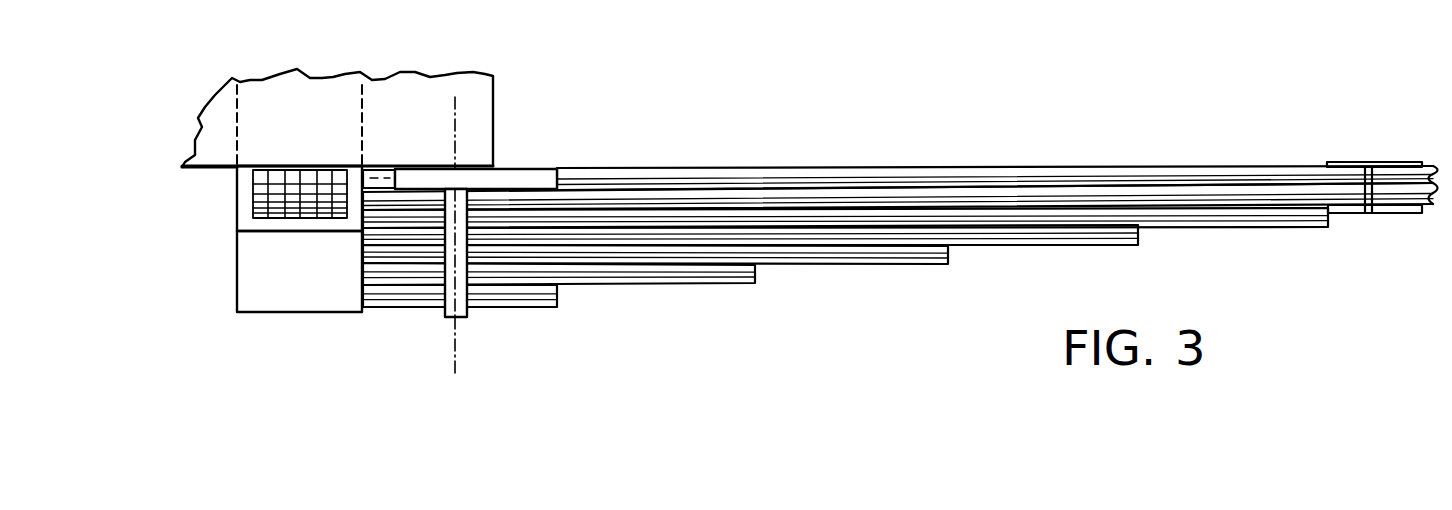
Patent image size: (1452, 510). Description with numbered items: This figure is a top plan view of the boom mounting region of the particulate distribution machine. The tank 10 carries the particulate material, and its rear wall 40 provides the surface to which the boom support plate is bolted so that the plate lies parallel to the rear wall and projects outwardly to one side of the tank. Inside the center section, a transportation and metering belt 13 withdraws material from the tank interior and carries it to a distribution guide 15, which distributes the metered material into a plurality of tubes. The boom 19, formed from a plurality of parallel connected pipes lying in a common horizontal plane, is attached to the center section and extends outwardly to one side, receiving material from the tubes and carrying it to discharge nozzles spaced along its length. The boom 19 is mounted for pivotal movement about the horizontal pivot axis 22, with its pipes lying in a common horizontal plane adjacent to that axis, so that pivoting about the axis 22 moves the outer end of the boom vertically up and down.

The tank 10 is at (495, 98).
The transportation and metering belt 13 is at (266, 196).
The distribution guide 15 is at (268, 258).
The boom 19 is at (850, 155).
The horizontal pivot axis 22 is at (458, 137).
The rear wall 40 is at (215, 167).